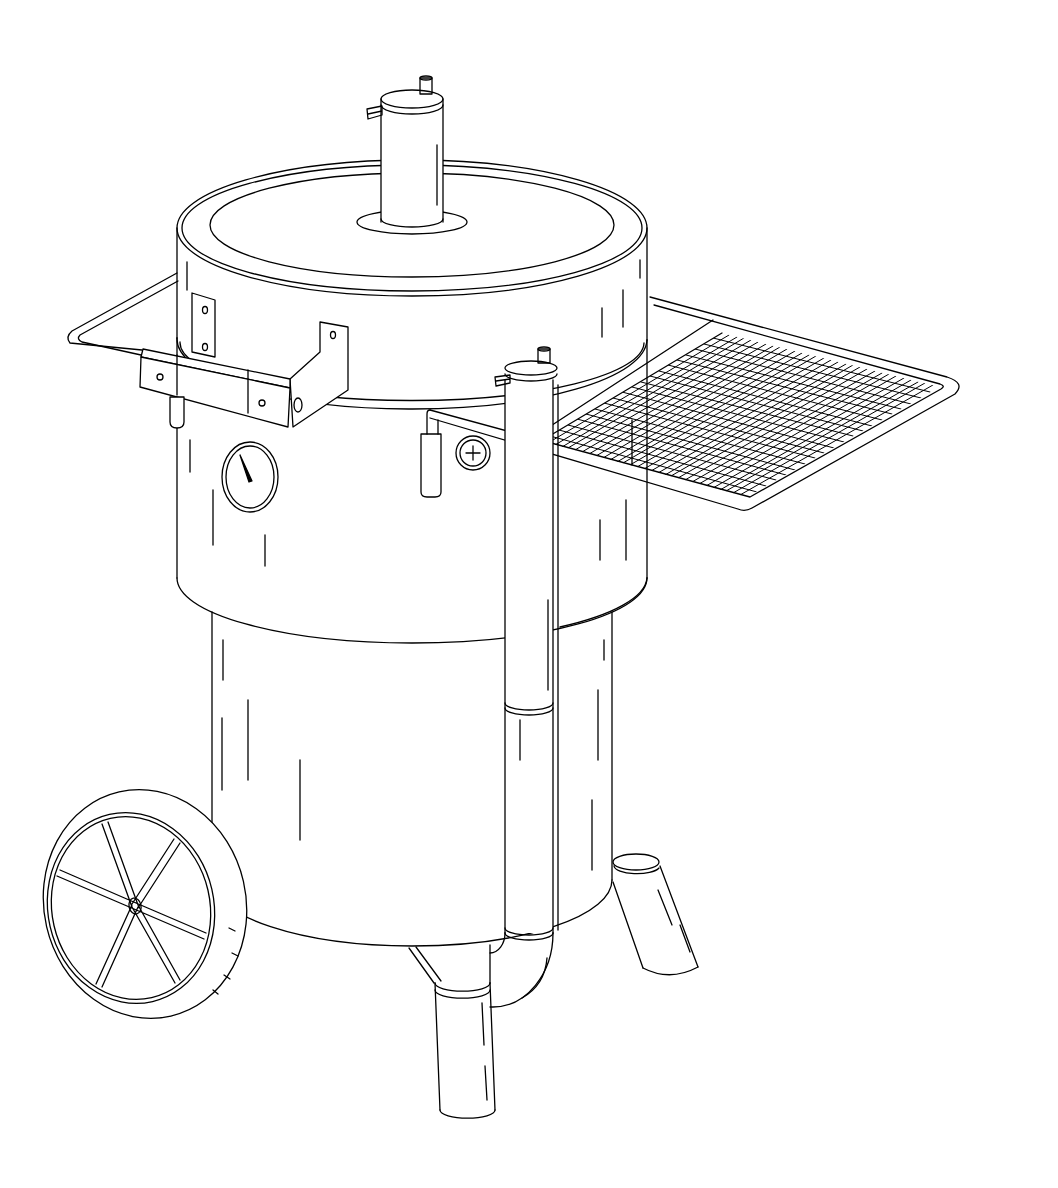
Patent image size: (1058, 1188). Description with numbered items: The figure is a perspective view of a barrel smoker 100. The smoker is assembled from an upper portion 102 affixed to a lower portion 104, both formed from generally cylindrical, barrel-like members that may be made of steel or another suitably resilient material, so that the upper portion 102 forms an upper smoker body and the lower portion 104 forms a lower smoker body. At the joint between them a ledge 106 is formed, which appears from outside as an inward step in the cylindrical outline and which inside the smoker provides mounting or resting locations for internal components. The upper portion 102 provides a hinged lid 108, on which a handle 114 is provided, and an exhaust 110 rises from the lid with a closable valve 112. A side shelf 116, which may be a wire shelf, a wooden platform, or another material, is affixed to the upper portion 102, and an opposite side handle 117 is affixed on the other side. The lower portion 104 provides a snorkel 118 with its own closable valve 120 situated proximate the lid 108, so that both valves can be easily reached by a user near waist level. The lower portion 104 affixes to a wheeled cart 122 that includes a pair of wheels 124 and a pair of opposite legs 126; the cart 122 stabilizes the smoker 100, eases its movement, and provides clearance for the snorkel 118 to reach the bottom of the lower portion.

The barrel smoker 100 is at (610, 76).
The upper portion 102 is at (184, 531).
The lower portion 104 is at (218, 698).
The ledge 106 is at (633, 600).
The hinged lid 108 is at (617, 203).
The exhaust 110 is at (435, 132).
The closable valve 112 is at (398, 95).
The handle 114 is at (242, 368).
The side shelf 116 is at (877, 370).
The opposite side handle 117 is at (127, 303).
The snorkel 118 is at (507, 811).
The closable valve 120 is at (525, 362).
The cart 122 is at (116, 1031).
The wheels 124 is at (130, 793).
The legs 126 is at (674, 925).